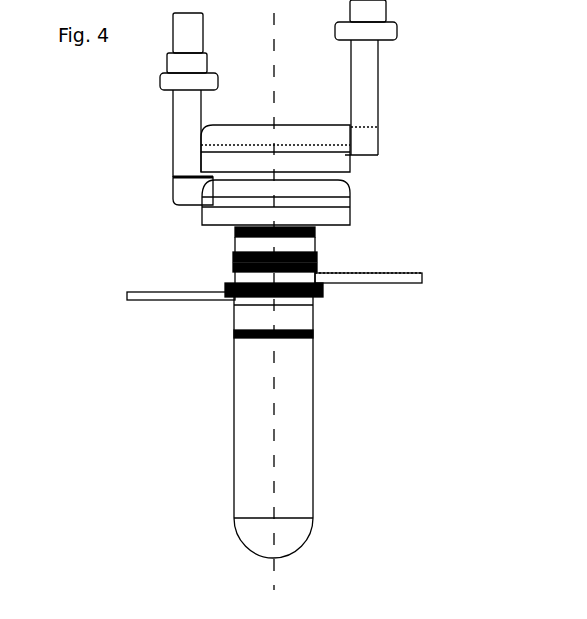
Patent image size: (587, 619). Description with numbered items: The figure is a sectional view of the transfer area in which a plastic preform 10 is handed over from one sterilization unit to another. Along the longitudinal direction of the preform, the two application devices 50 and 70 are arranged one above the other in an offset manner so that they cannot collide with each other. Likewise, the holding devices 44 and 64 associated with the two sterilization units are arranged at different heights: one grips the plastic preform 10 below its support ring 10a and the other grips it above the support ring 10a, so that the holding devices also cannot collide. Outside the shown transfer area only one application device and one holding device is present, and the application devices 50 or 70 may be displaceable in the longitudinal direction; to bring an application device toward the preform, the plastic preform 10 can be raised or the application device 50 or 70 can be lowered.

The application device 70 is at (363, 168).
The application device 50 is at (185, 211).
The holding device 44 is at (150, 298).
The holding device 64 is at (365, 280).
The support ring 10a is at (310, 300).
The plastic preform 10 is at (293, 397).